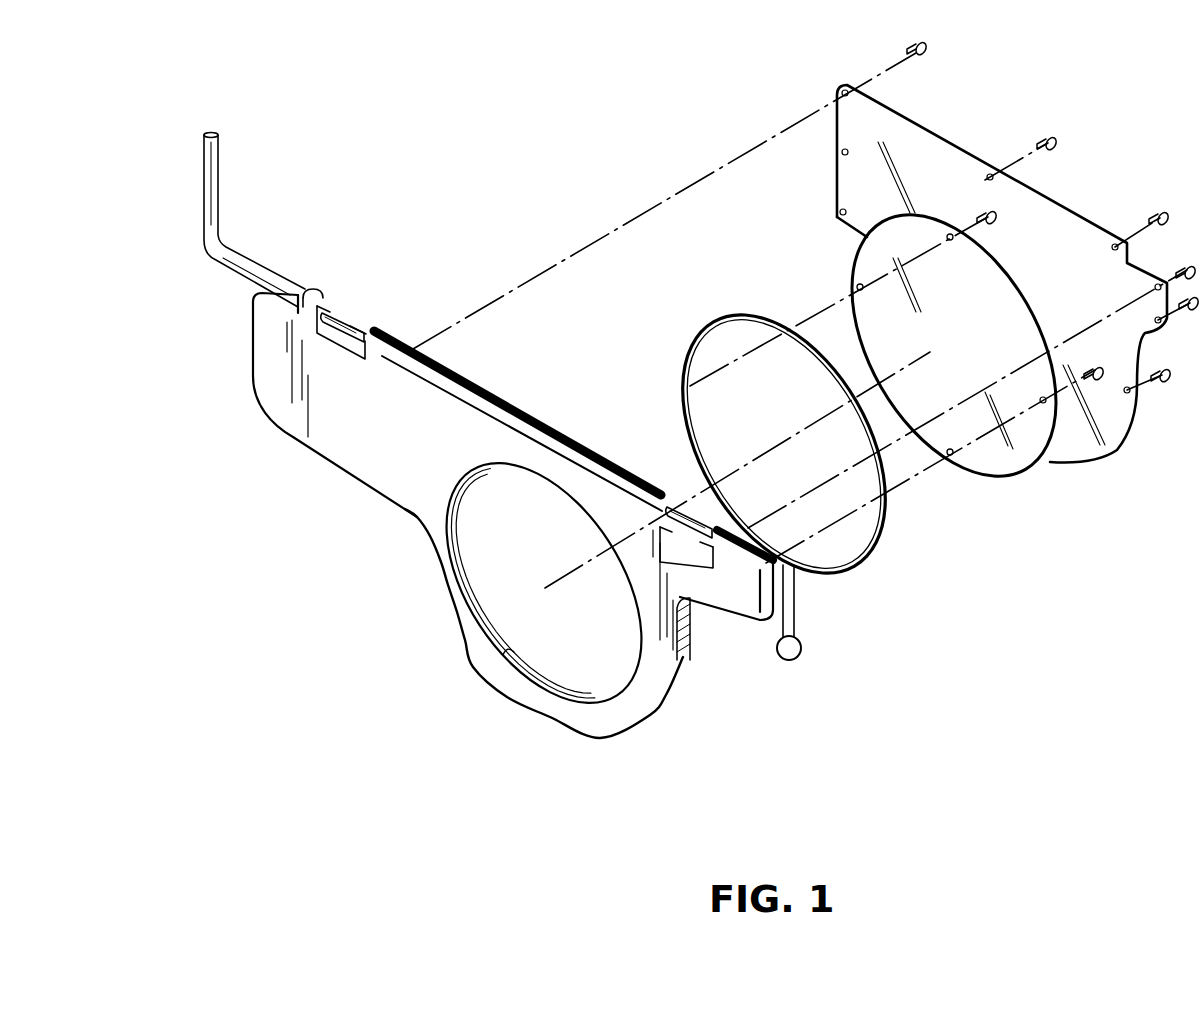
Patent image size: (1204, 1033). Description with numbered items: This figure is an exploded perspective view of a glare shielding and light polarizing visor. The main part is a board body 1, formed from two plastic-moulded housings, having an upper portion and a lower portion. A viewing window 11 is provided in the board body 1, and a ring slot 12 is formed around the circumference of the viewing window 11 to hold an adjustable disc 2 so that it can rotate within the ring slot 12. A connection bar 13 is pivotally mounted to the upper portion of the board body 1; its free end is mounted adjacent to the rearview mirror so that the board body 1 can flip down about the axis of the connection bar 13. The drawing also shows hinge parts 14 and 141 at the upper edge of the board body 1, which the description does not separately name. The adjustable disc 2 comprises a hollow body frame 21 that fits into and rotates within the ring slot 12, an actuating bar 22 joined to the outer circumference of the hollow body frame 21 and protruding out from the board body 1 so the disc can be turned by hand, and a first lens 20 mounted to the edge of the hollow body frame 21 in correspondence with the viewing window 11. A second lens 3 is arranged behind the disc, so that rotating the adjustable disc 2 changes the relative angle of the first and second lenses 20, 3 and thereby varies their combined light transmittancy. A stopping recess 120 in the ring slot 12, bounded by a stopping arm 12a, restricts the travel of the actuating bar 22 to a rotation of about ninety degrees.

The board body 1 is at (365, 455).
The viewing window 11 is at (502, 607).
The ring slot 12 is at (508, 672).
The stopping arm 12a is at (690, 660).
The stopping recess 120 is at (663, 718).
The connection bar 13 is at (245, 264).
The hinge knuckle 14 is at (333, 305).
The pivot pin 141 is at (348, 320).
The adjustable disc 2 is at (742, 310).
The hollow body frame 21 is at (758, 313).
The actuating bar 22 is at (800, 628).
The first lens 20 is at (990, 457).
The second lens 3 is at (940, 130).